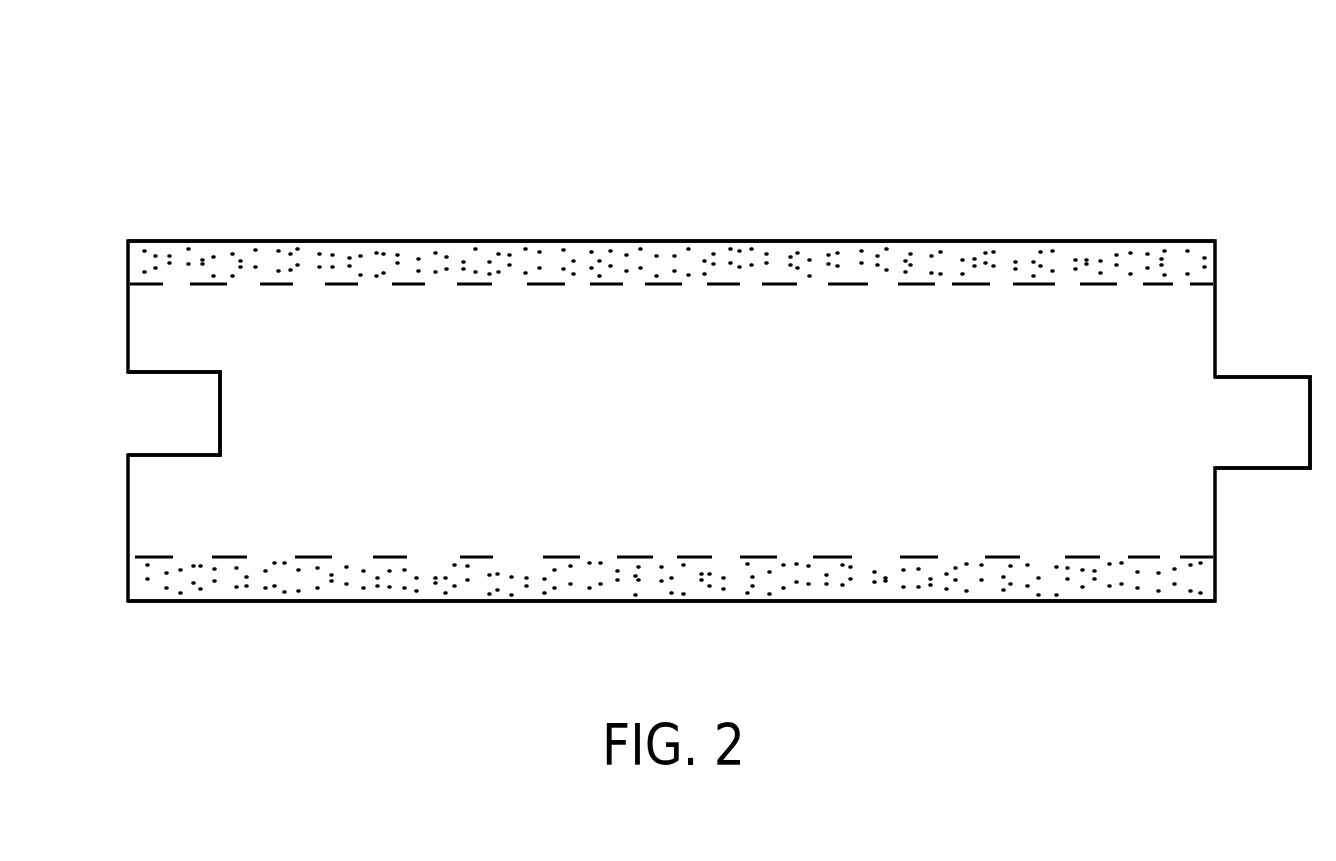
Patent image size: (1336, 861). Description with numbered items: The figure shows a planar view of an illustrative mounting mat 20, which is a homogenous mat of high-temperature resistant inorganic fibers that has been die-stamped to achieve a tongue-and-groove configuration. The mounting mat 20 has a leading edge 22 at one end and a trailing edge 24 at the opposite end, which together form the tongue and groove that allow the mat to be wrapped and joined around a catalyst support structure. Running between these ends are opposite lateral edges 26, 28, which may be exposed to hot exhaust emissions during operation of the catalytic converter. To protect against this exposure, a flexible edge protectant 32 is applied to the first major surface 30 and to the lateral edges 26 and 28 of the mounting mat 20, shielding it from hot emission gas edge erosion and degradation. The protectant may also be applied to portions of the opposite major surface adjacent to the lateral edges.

The mounting mat 20 is at (840, 102).
The leading edge 22 is at (1217, 545).
The trailing edge 24 is at (126, 303).
The lateral edge 26 is at (742, 242).
The lateral edge 28 is at (298, 602).
The first major surface 30 is at (317, 248).
The flexible edge protectant 32 is at (933, 252).